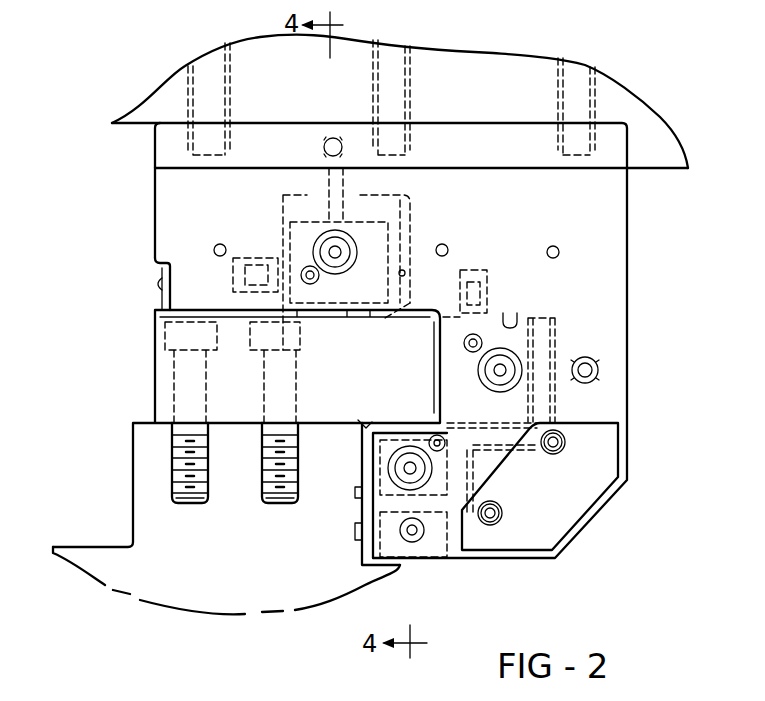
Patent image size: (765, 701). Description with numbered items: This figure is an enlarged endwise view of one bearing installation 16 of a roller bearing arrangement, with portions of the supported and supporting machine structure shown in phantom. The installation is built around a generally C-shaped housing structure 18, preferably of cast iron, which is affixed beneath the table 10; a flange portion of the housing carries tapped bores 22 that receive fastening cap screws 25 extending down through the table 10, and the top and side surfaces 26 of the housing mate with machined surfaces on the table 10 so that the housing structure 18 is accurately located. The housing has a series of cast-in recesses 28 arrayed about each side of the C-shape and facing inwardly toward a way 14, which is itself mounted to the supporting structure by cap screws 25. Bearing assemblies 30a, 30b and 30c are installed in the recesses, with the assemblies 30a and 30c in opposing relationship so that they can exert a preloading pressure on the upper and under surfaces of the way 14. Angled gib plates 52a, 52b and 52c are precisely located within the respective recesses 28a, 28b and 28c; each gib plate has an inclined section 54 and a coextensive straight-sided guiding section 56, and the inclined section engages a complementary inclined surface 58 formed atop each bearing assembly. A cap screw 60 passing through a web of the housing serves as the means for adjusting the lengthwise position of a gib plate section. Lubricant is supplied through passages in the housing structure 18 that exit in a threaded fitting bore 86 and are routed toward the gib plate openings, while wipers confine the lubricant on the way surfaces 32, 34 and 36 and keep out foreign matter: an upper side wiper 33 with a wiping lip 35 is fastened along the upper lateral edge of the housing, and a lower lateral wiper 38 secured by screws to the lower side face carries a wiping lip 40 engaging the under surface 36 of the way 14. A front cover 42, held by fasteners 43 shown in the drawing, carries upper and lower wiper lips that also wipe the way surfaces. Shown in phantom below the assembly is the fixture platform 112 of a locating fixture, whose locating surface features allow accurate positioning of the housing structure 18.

The table 10 is at (628, 100).
The top and side surfaces 26 is at (487, 123).
The recesses 28 is at (627, 147).
The tapped bores 22 is at (190, 140).
The housing structure 18 is at (617, 212).
The bearing installation 16 is at (654, 272).
The inclined surface 58 is at (316, 220).
The bearing assembly 30a is at (326, 292).
The inclined section 54 is at (412, 200).
The angled gib plate 52a is at (412, 222).
The straight-sided guiding section 56 is at (412, 242).
The recess 28a is at (405, 273).
The recess 28b is at (509, 313).
The cap screw 60 is at (512, 348).
The angled gib plate 52b is at (546, 343).
The threaded fitting bore 86 is at (598, 370).
The upper side wiper 33 is at (160, 265).
The wiping lip 35 is at (158, 303).
The way 14 is at (150, 362).
The cap screws 25 is at (170, 333).
The way surface 32 is at (228, 315).
The way surface 34 is at (433, 330).
The bearing assembly 30b is at (452, 365).
The bearing assembly 30c is at (405, 430).
The wiping lip 40 is at (364, 428).
The under surface 36 is at (368, 433).
The lower lateral wiper 38 is at (357, 512).
The front cover 42 is at (555, 533).
The fastener 43 is at (566, 445).
The recess 28c is at (393, 520).
The angled gib plate 52c is at (450, 522).
The fixture platform 112 is at (230, 593).